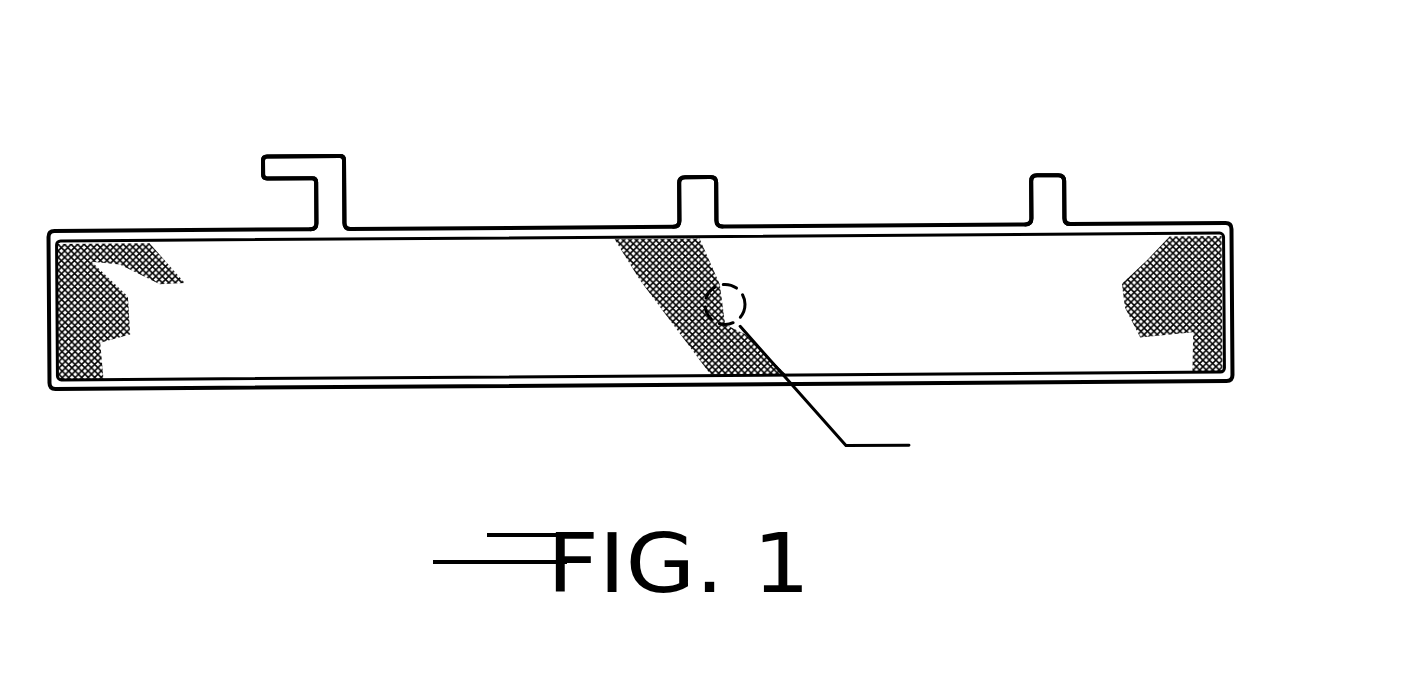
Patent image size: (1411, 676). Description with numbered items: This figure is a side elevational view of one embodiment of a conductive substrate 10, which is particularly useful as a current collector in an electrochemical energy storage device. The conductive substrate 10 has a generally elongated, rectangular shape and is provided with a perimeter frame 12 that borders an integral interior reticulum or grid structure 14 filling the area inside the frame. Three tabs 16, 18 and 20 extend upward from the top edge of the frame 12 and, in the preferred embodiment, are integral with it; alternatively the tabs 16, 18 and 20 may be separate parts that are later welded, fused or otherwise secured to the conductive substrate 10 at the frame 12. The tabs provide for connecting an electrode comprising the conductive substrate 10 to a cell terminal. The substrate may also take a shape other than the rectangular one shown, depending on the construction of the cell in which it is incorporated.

The conductive substrate 10 is at (717, 280).
The perimeter frame 12 is at (247, 390).
The interior reticulum or grid structure 14 is at (712, 263).
The tab 16 is at (340, 179).
The tab 18 is at (702, 197).
The tab 20 is at (1050, 198).